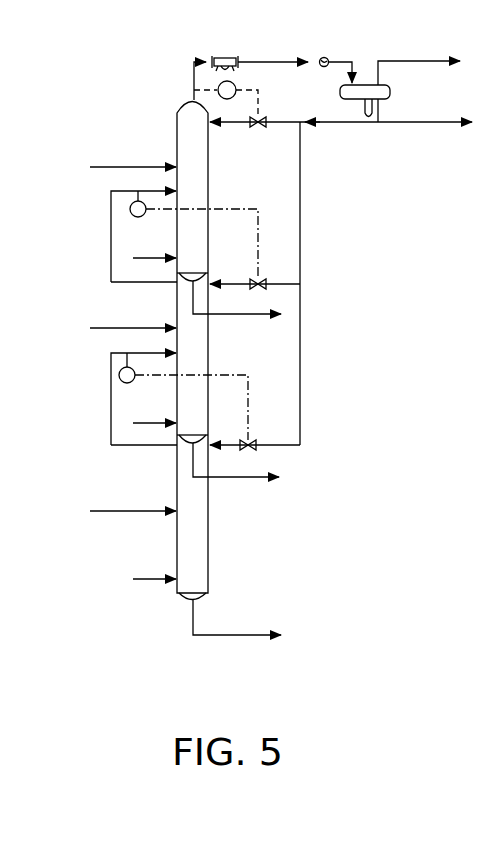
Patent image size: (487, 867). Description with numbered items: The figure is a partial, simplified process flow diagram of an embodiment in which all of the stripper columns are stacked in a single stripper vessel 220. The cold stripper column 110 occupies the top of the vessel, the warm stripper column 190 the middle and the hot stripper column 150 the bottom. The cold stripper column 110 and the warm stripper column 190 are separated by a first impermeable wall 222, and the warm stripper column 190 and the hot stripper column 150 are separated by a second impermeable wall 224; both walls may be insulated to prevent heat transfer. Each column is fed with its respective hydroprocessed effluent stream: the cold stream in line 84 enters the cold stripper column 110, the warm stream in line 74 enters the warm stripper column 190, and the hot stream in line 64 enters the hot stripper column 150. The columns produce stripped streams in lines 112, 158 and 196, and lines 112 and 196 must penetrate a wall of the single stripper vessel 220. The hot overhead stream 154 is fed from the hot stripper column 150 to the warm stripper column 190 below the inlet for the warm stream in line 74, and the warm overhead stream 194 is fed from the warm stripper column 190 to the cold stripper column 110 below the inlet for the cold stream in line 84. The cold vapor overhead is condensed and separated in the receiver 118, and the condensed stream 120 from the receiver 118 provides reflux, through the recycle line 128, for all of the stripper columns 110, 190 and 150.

The hot hydroprocessed effluent line 64 is at (140, 511).
The warm hydroprocessed effluent line 74 is at (115, 327).
The cold hydroprocessed effluent line 84 is at (120, 167).
The cold stripper column 110 is at (208, 183).
The cold stripped line 112 is at (228, 314).
The receiver 118 is at (340, 92).
The condensed line 120 is at (335, 122).
The recycle line 128 is at (300, 193).
The hot stripper column 150 is at (208, 520).
The hot overhead stream 154 is at (111, 418).
The stripped stream line 158 is at (193, 622).
The warm stripper column 190 is at (208, 360).
The warm overhead stream 194 is at (111, 243).
The warm stripped line 196 is at (243, 477).
The single stripper vessel 220 is at (208, 560).
The first impermeable wall 222 is at (186, 285).
The second impermeable wall 224 is at (186, 447).